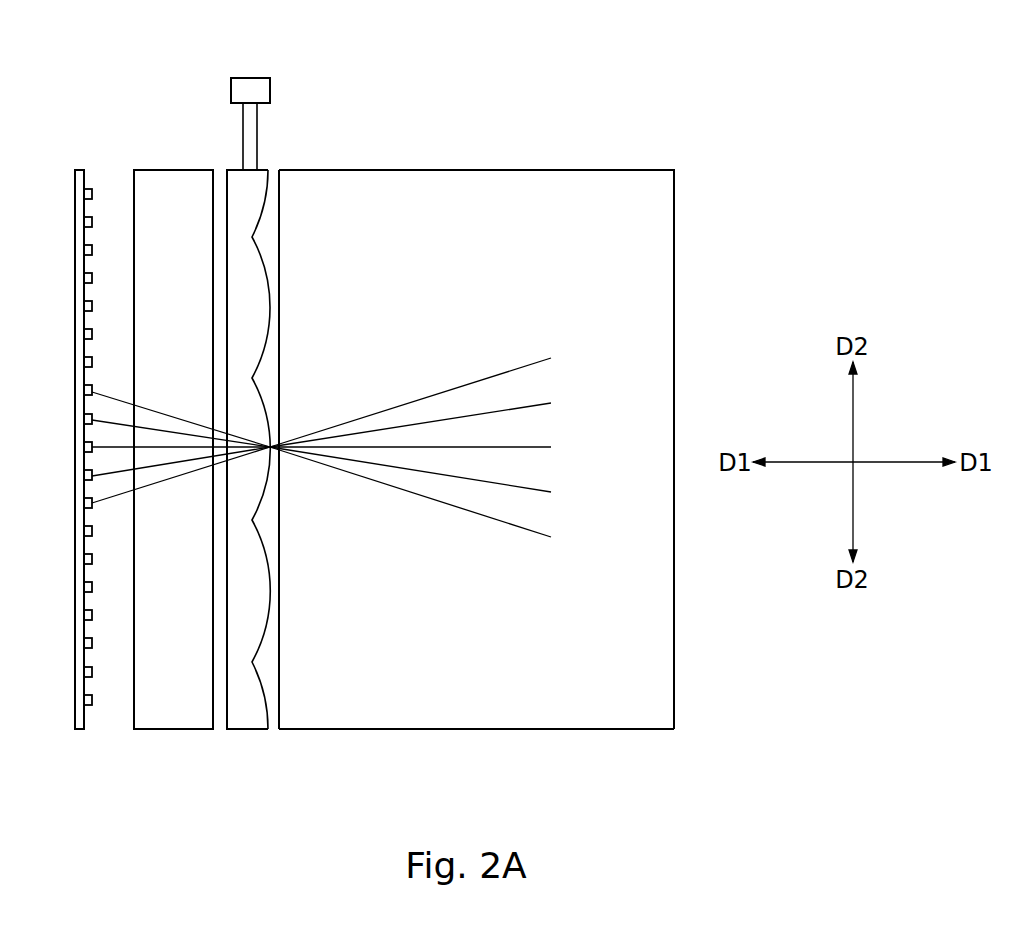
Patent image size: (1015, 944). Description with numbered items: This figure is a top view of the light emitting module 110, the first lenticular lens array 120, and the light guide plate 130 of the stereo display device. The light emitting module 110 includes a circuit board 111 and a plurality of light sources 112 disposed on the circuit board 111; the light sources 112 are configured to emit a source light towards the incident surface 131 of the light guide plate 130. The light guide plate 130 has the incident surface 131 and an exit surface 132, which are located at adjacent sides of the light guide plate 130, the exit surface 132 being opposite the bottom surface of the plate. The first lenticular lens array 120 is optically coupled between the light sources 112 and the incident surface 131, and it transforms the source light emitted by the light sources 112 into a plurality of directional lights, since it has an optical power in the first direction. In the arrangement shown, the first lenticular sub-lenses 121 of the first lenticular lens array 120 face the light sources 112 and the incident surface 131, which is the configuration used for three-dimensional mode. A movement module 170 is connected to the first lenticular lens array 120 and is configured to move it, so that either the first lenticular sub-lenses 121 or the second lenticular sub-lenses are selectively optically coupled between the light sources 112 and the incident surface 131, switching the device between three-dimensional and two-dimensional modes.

The light emitting module 110 is at (165, 93).
The circuit board 111 is at (82, 168).
The light sources 112 is at (91, 192).
The first lenticular lens array 120 is at (262, 168).
The first lenticular sub-lenses 121 is at (248, 297).
The light guide plate 130 is at (425, 732).
The incident surface 131 is at (279, 692).
The exit surface 132 is at (337, 715).
The movement module 170 is at (248, 87).